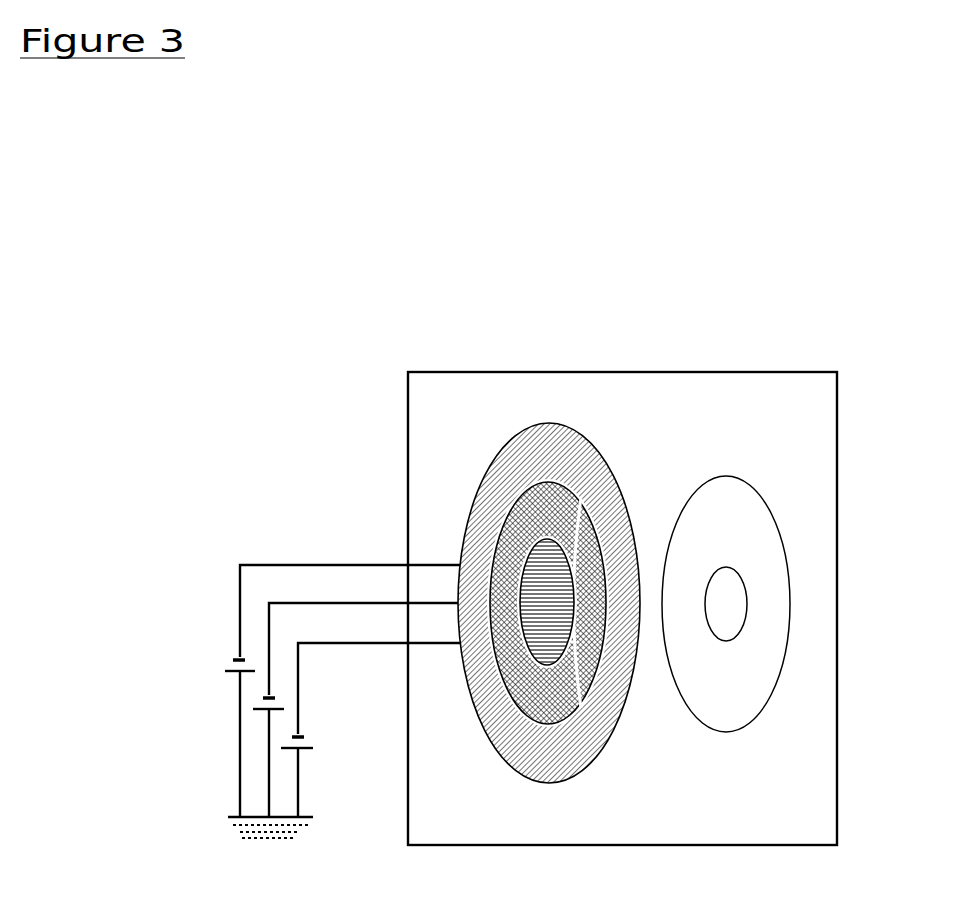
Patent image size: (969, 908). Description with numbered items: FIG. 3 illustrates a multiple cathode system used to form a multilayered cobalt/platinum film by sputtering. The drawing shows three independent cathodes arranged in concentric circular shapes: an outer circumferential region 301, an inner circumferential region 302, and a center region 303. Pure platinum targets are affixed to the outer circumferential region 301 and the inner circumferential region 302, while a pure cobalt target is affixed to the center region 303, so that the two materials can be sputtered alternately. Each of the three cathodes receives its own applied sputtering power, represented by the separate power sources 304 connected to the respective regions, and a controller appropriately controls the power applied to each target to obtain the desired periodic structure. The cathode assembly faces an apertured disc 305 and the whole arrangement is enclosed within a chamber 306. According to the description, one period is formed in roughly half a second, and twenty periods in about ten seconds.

The outer electrode layer 301 is at (590, 758).
The intermediate electrode layer 302 is at (492, 731).
The inner electrode layer 303 is at (597, 506).
The voltage sources 304 is at (226, 660).
The target electrode with aperture 305 is at (762, 678).
The housing 306 is at (653, 371).